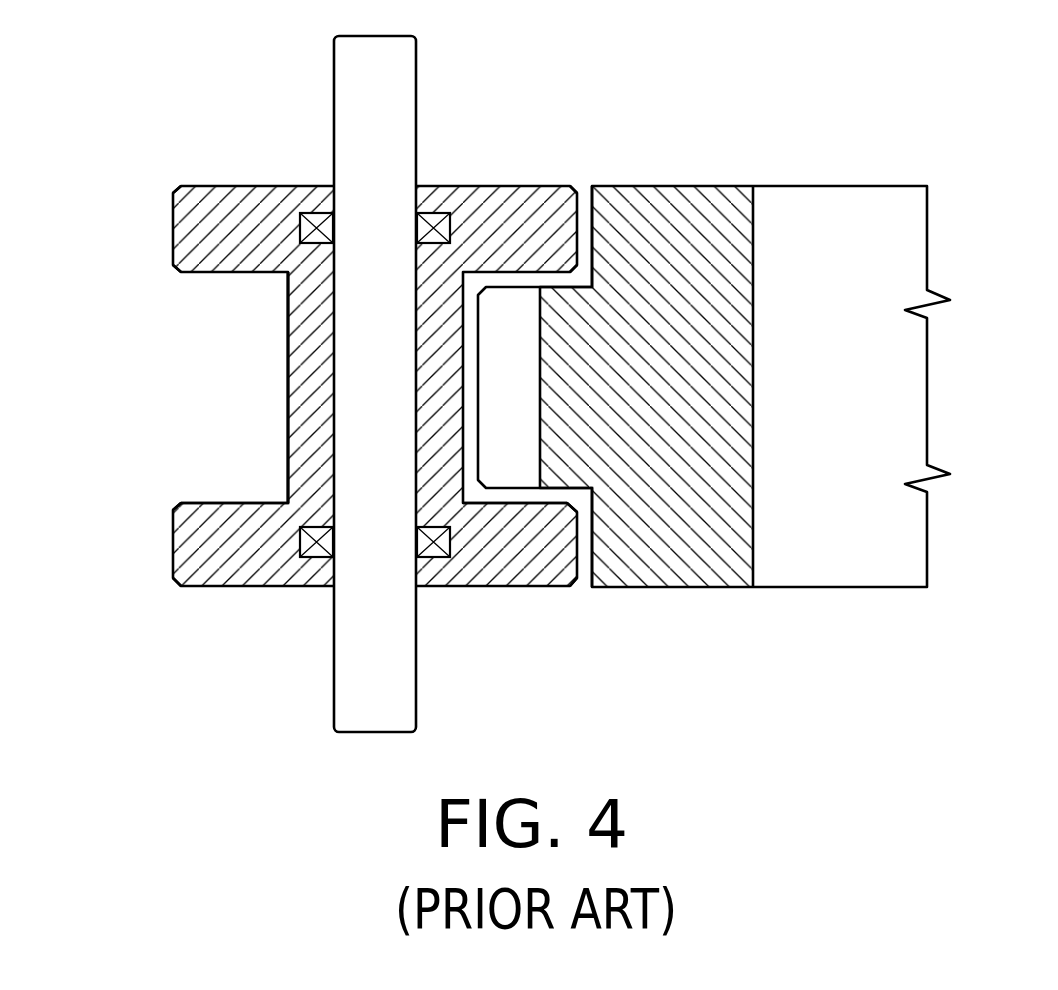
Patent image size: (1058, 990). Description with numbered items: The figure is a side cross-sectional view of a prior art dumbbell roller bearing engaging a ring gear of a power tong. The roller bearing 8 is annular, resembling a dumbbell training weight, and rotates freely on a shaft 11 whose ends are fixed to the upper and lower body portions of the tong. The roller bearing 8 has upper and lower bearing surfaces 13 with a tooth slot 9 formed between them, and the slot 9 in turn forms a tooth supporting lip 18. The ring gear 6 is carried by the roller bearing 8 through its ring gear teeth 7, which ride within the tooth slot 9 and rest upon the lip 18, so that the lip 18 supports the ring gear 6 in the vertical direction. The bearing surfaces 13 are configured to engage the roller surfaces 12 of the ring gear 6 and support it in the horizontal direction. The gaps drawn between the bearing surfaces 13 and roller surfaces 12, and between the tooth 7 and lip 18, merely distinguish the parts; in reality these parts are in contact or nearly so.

The ring gear 6 is at (722, 172).
The ring gear teeth 7 is at (518, 360).
The roller bearing 8 is at (233, 598).
The tooth slot 9 is at (248, 384).
The shaft 11 is at (418, 88).
The roller surfaces 12 is at (590, 215).
The bearing surfaces 13 is at (173, 222).
The tooth supporting lip 18 is at (234, 501).